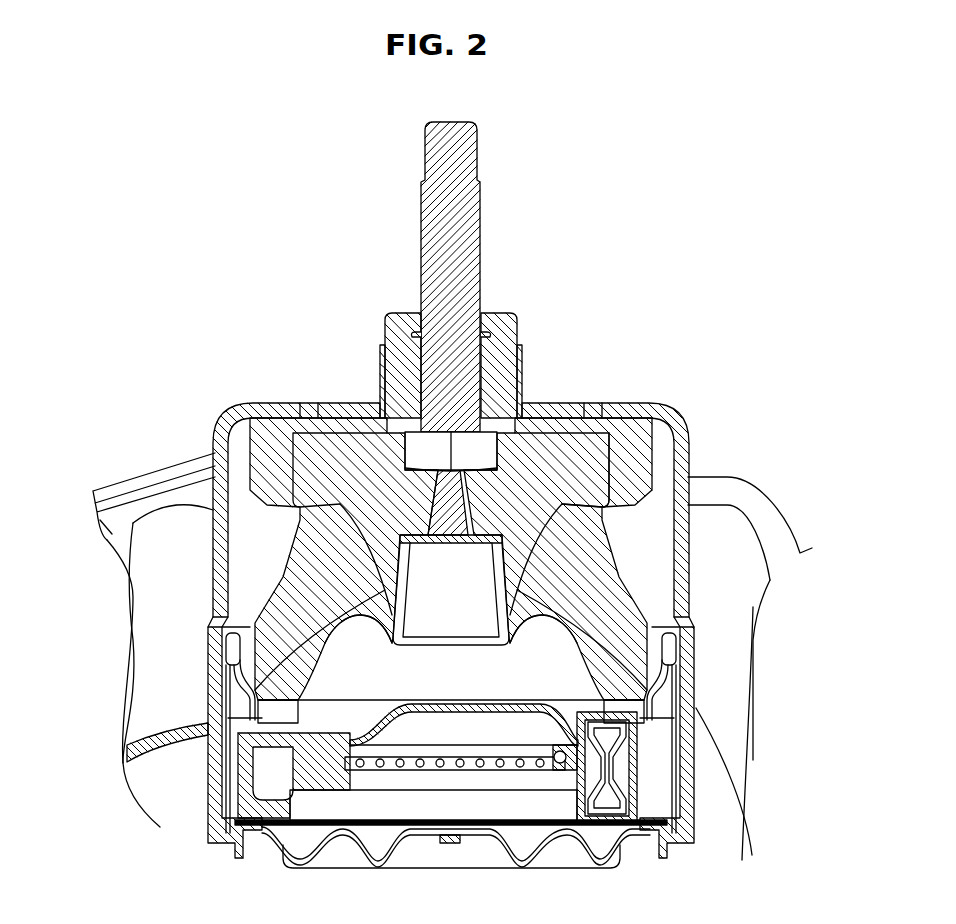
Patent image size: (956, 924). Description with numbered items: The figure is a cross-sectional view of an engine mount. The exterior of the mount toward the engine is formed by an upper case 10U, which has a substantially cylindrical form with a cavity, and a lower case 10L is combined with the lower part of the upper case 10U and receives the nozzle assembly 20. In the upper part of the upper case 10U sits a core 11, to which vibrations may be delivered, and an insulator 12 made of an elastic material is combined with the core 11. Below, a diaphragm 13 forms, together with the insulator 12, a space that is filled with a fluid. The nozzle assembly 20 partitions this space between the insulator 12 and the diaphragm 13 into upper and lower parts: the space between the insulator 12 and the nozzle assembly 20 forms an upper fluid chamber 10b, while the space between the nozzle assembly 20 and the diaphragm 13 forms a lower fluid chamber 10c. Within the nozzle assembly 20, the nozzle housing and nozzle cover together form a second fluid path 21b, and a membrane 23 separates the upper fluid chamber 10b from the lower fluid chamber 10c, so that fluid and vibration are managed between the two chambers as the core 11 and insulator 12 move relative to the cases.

The upper case 10U is at (676, 411).
The lower case 10L is at (670, 681).
The upper fluid chamber 10b is at (402, 692).
The lower fluid chamber 10c is at (380, 838).
The core 11 is at (548, 447).
The insulator 12 is at (640, 462).
The diaphragm 13 is at (477, 837).
The nozzle assembly 20 is at (524, 826).
The second fluid path 21b is at (278, 777).
The membrane 23 is at (487, 733).